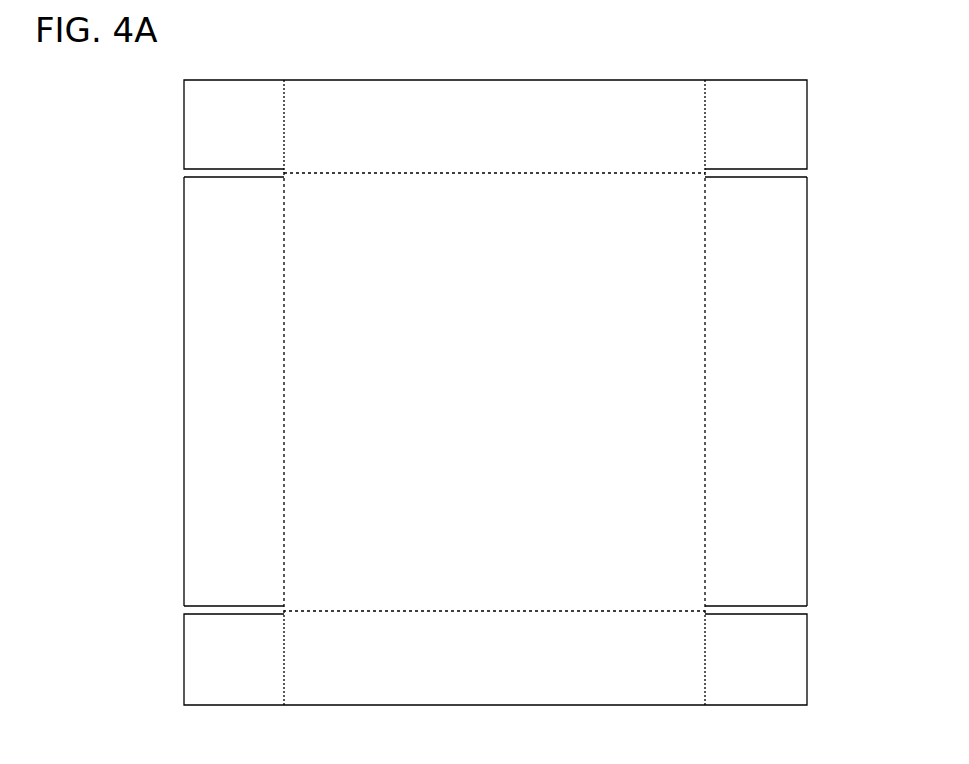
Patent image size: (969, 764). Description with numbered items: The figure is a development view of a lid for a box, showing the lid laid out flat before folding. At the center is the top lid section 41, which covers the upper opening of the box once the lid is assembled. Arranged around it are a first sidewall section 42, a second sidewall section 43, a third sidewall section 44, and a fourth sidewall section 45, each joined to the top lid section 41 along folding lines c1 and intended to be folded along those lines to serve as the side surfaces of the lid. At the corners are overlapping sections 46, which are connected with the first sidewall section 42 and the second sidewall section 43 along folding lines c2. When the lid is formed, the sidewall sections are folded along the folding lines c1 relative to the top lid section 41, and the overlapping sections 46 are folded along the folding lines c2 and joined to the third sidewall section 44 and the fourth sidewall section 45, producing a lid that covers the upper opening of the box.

The top lid section 41 is at (511, 394).
The first sidewall section 42 is at (515, 677).
The second sidewall section 43 is at (499, 140).
The third sidewall section 44 is at (770, 394).
The fourth sidewall section 45 is at (248, 394).
The overlapping sections 46 is at (216, 128).
The folding lines c1 is at (531, 172).
The folding lines c2 is at (284, 128).